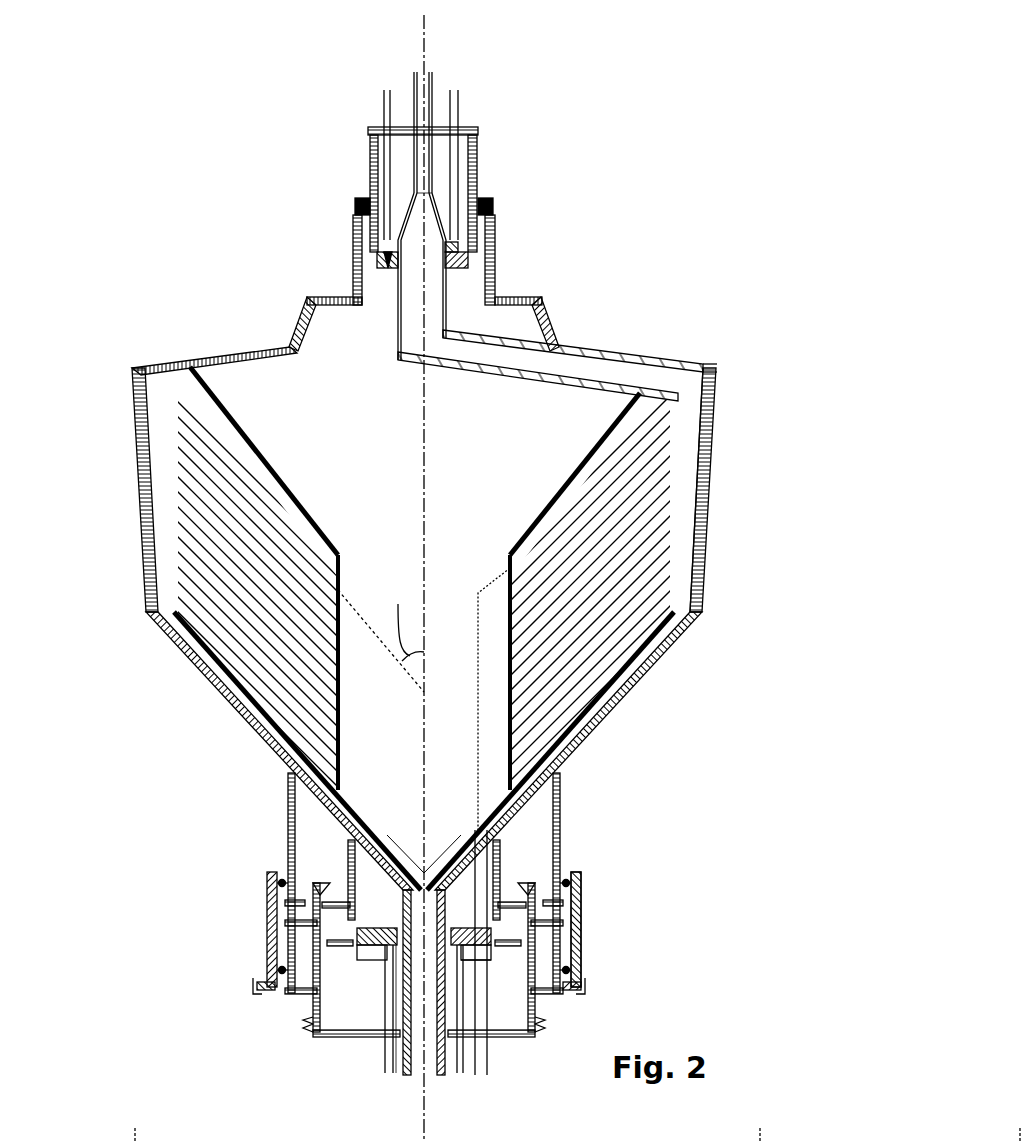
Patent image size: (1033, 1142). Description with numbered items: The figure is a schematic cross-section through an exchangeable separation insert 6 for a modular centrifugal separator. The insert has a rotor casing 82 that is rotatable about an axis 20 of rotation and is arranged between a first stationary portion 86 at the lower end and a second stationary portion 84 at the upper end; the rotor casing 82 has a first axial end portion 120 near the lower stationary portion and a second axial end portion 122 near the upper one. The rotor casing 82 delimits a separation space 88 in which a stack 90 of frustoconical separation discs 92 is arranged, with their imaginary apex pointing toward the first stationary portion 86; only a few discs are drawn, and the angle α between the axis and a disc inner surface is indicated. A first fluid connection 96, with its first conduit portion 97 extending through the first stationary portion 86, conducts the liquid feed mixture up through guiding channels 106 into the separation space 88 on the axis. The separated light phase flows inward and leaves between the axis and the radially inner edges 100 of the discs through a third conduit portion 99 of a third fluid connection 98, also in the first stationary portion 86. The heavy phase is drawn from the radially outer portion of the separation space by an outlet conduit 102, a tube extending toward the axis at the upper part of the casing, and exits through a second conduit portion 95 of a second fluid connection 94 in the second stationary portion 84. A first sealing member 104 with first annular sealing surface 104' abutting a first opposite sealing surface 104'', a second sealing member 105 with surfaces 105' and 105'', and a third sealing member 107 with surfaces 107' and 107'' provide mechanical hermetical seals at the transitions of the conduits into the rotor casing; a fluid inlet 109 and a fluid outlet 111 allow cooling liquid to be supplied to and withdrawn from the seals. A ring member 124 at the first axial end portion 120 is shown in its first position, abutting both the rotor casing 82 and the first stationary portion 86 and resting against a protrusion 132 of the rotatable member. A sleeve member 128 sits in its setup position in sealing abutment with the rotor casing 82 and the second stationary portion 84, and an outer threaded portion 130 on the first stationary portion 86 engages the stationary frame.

The exchangeable separation insert 6 is at (118, 118).
The axis of rotation 20 is at (422, 52).
The second fluid connection 94 is at (430, 72).
The second conduit portion 95 is at (432, 175).
The fluid outlet 111 is at (386, 100).
The fluid inlet 109 is at (458, 98).
The second stationary portion 84 is at (374, 174).
The sleeve member 128 is at (486, 205).
The second axial end portion 122 is at (552, 257).
The second sealing member 105 is at (352, 273).
The second annular sealing surface 105' is at (363, 300).
The second opposite sealing surface 105'' is at (514, 231).
The outlet conduit 102 is at (622, 376).
The rotor casing 82 is at (140, 503).
The separation space 88 is at (706, 452).
The stack of frustoconical separation discs 90 is at (690, 520).
The separation disc 92 is at (690, 567).
The radially inner edge 100 is at (506, 573).
The guiding channel 106 is at (600, 707).
The first axial end portion 120 is at (580, 856).
The ring member 124 is at (268, 908).
The third conduit portion 99 is at (582, 960).
The protrusion 132 is at (266, 985).
The first stationary portion 86 is at (548, 987).
The first sealing member 104 is at (333, 1019).
The first annular sealing surface 104' is at (385, 919).
The first opposite sealing surface 104'' is at (273, 1002).
The third sealing member 107 is at (531, 993).
The third annular sealing surface 107' is at (469, 919).
The third opposite sealing surface 107'' is at (525, 1013).
The outer threaded portion 130 is at (308, 1042).
The first fluid connection 96 is at (395, 1061).
The first conduit portion 97 is at (402, 1030).
The third fluid connection 98 is at (487, 1052).